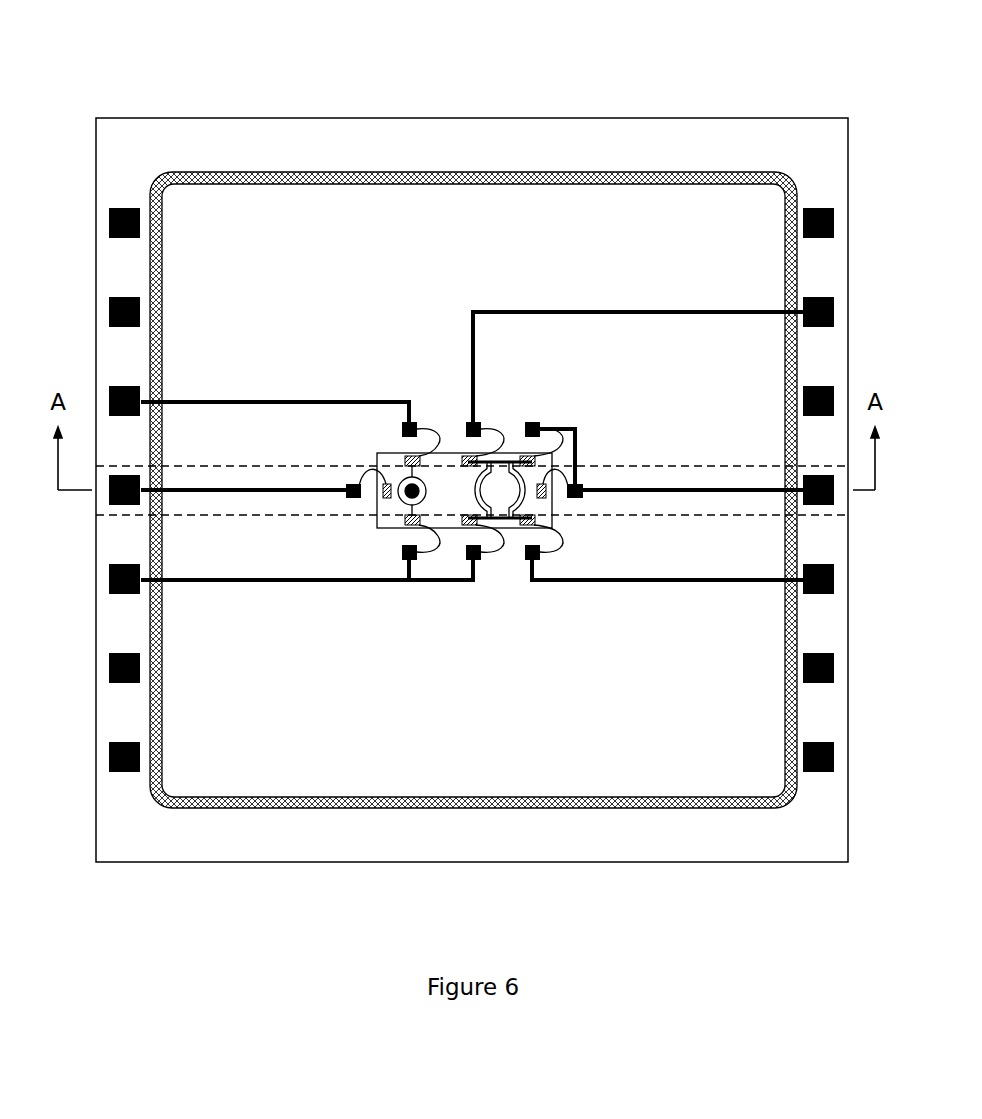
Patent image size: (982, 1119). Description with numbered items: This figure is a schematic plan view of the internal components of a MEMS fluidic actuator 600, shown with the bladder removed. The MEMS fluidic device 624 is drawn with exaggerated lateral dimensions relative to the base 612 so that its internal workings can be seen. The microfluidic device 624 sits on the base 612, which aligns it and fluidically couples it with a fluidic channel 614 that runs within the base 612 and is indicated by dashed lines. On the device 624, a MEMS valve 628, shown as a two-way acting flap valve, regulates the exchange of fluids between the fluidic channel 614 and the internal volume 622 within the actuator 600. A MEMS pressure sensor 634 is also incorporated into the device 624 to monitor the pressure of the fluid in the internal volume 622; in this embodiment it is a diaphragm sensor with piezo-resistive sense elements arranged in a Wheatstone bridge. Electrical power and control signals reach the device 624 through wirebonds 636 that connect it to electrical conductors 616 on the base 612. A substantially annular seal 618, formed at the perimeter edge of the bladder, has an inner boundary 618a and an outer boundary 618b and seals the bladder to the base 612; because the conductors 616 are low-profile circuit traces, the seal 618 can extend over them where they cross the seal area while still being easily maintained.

The MEMS fluidic actuator 600 is at (461, 86).
The base 612 is at (158, 844).
The fluidic channel 614 is at (658, 528).
The electrical conductors 616 is at (204, 388).
The annular seal 618 is at (288, 805).
The inner boundary 618a is at (378, 785).
The outer boundary 618b is at (380, 820).
The internal volume 622 is at (717, 249).
The MEMS fluidic device 624 is at (445, 423).
The MEMS valve 628 is at (406, 504).
The MEMS pressure sensor 634 is at (502, 487).
The wirebonds 636 is at (435, 558).